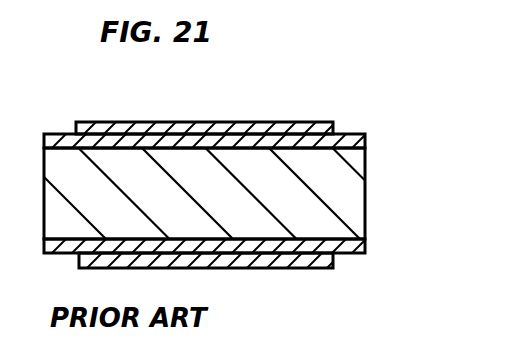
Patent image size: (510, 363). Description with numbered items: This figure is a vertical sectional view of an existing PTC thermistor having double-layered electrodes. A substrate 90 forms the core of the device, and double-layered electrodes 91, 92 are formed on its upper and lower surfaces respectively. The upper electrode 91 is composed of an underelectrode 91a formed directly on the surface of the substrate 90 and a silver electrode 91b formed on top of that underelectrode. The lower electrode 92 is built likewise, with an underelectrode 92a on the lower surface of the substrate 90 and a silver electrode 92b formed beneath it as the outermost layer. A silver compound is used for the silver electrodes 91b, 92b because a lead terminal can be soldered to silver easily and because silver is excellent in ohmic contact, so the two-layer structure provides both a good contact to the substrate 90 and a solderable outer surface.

The substrate 90 is at (357, 187).
The electrode 91 is at (267, 122).
The underelectrode 91a is at (365, 135).
The silver electrode 91b is at (312, 122).
The electrode 92 is at (283, 269).
The underelectrode 92a is at (365, 250).
The silver electrode 92b is at (331, 268).